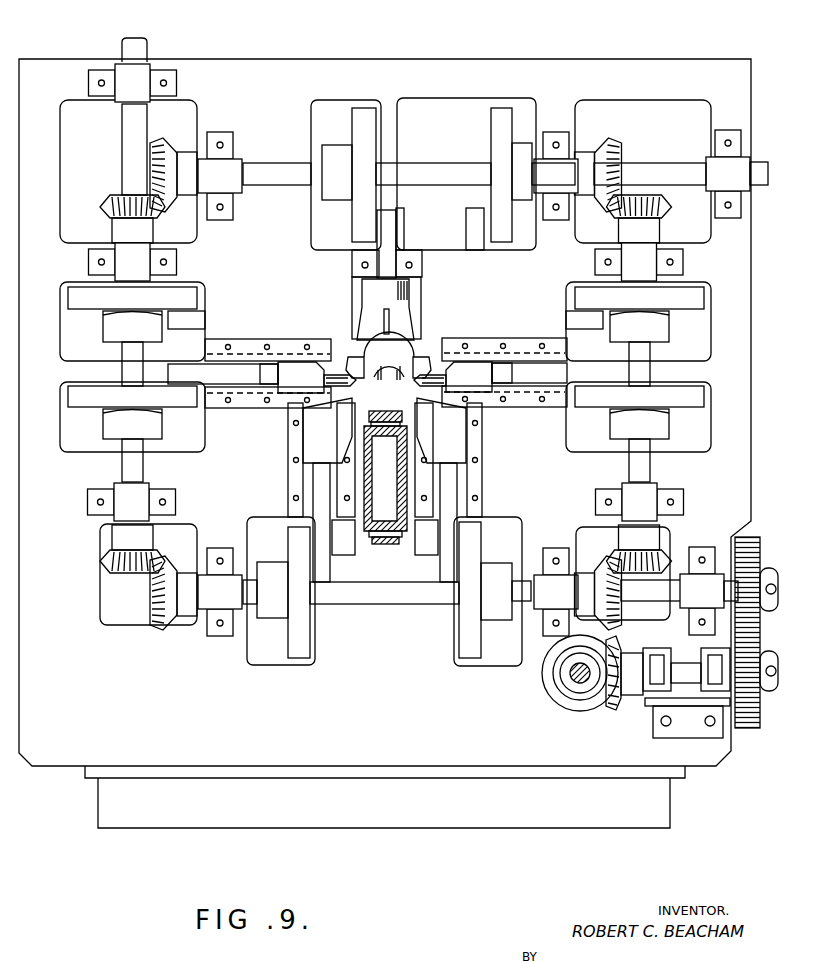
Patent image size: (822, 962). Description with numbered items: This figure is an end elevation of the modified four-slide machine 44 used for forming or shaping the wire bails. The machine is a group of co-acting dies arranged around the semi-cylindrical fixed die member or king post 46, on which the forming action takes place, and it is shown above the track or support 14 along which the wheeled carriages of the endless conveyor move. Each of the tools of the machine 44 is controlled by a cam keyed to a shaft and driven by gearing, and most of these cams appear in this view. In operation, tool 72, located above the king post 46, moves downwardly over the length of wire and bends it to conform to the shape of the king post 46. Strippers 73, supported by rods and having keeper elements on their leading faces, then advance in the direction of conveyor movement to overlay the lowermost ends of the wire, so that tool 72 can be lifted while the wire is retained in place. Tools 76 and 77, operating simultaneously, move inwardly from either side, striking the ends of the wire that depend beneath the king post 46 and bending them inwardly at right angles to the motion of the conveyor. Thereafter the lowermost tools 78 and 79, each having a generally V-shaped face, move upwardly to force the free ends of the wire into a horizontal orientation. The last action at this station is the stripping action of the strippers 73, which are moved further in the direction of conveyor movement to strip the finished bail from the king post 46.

The four-slide machine 44 is at (456, 56).
The tool 72 is at (409, 289).
The strippers 73 is at (352, 358).
The tool 77 is at (342, 377).
The tool 76 is at (430, 377).
The king post 46 is at (396, 385).
The lowermost tool 79 is at (354, 402).
The lowermost tool 78 is at (414, 400).
The track 14 is at (381, 436).